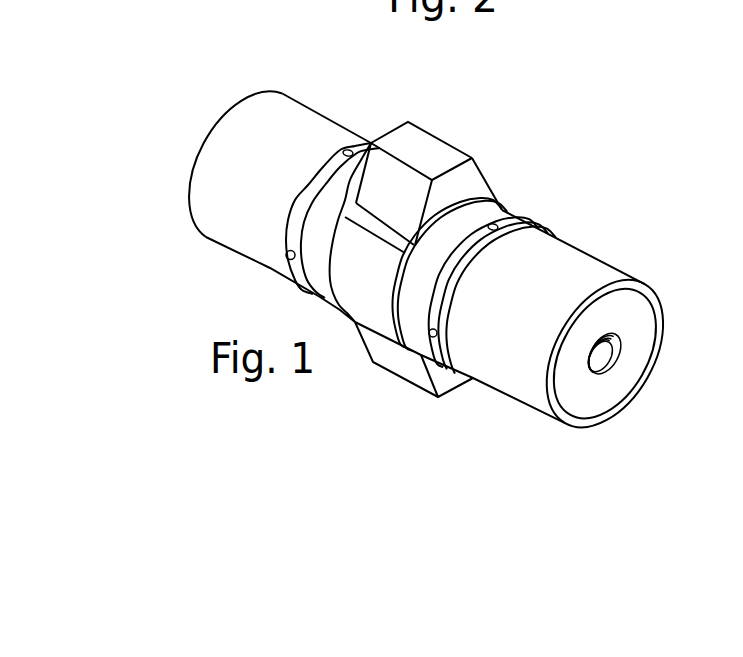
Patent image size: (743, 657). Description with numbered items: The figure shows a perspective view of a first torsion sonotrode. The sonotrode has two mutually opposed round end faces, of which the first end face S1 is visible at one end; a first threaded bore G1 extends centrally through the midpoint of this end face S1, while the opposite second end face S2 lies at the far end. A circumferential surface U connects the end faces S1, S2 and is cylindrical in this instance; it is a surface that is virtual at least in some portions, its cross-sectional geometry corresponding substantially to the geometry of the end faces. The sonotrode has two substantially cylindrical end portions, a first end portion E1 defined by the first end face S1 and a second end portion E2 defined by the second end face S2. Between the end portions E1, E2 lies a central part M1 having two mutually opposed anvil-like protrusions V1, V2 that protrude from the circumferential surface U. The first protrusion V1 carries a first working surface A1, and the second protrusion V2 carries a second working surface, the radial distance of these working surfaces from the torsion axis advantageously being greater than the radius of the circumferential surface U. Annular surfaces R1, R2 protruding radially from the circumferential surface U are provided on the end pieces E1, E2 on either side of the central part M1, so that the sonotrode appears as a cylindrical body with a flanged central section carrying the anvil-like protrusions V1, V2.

The circumferential surface U is at (302, 80).
The second end face S2 is at (216, 78).
The second end portion E2 is at (232, 222).
The annular surface R2 is at (371, 142).
The middle member / nut body M1 is at (358, 386).
The first working surface A1 is at (448, 152).
The first protrusion V1 is at (470, 183).
The second protrusion V2 is at (437, 377).
The first end face S1 is at (640, 342).
The annular surface R1 is at (531, 214).
The first end portion E1 is at (585, 262).
The first threaded bore G1 is at (610, 368).